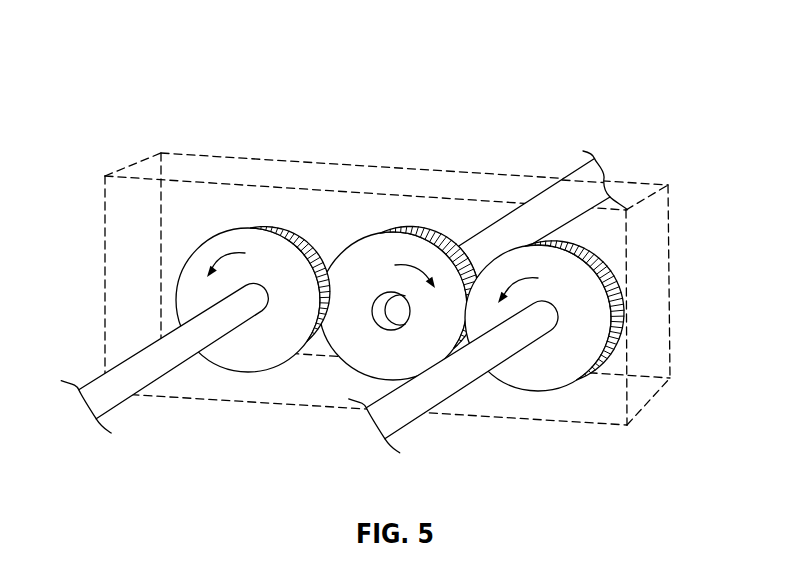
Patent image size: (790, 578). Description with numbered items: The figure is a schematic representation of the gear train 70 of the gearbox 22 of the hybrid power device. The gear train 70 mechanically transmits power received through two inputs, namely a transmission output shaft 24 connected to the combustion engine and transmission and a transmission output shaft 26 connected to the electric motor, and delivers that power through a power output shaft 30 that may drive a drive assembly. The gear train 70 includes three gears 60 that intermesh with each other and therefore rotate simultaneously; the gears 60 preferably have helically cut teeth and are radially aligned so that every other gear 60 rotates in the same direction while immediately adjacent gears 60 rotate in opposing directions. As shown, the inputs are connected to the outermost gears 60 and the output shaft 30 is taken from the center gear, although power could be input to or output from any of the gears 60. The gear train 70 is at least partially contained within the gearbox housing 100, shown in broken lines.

The gearbox 22 is at (425, 70).
The transmission output shaft 24 is at (128, 360).
The transmission output shaft 26 is at (438, 403).
The power output shaft 30 is at (541, 192).
The gears 60 is at (374, 365).
The gear train 70 is at (291, 423).
The gearbox housing 100 is at (632, 179).